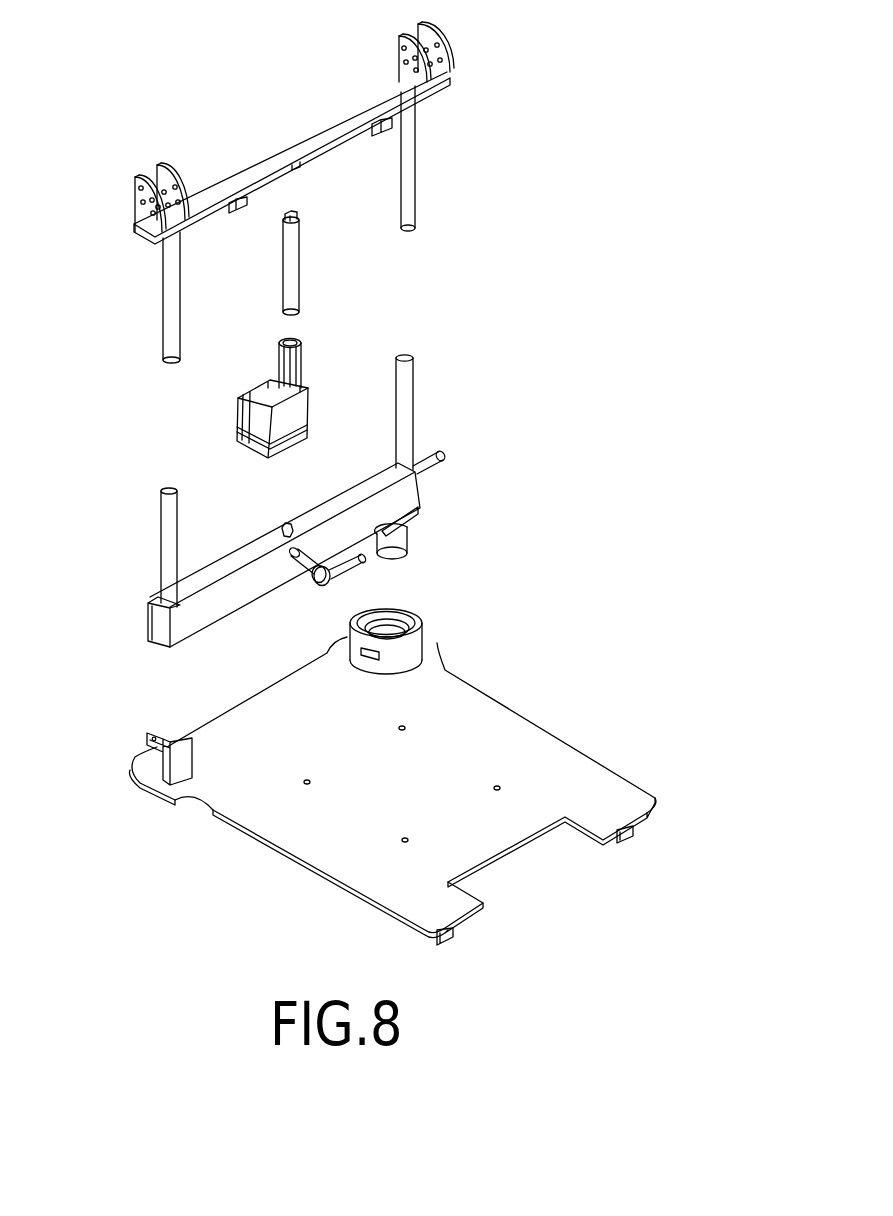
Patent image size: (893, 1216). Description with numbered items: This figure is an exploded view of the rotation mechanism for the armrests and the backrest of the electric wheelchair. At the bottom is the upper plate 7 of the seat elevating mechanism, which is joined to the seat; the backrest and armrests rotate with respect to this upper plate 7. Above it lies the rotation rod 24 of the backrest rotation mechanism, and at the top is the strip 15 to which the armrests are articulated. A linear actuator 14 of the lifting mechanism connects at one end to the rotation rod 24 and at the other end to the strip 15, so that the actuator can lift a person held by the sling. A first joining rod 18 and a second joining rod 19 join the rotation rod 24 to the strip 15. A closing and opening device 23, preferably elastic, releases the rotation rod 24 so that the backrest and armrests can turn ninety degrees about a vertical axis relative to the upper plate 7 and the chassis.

The upper plate 7 is at (252, 782).
The linear actuator 14 is at (292, 281).
The strip 15 is at (253, 163).
The first joining rod 18 is at (163, 525).
The second joining rod 19 is at (411, 403).
The closing and opening device 23 is at (445, 453).
The rotation rod 24 is at (227, 600).